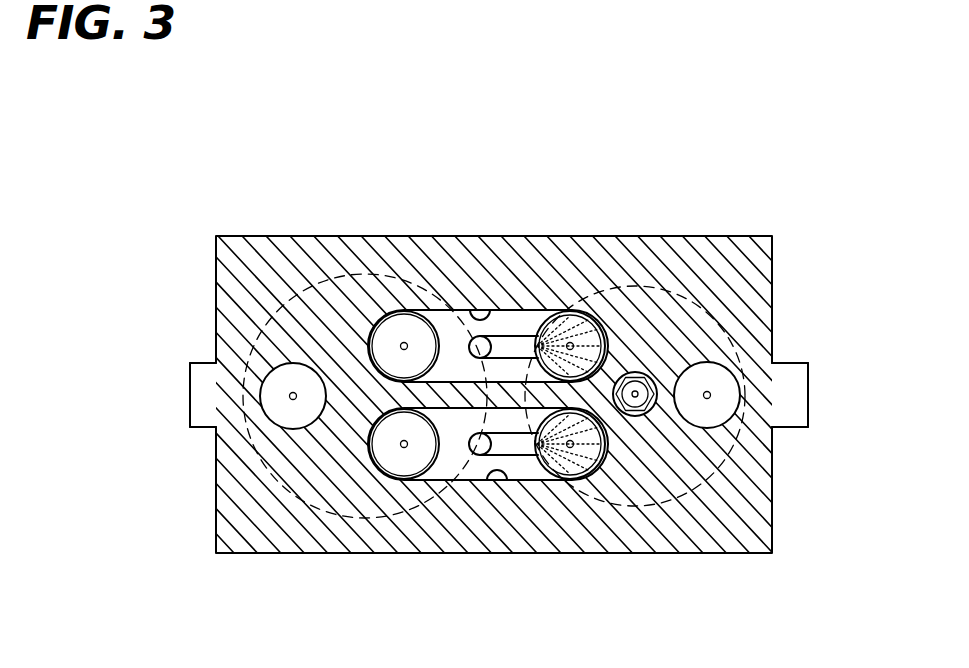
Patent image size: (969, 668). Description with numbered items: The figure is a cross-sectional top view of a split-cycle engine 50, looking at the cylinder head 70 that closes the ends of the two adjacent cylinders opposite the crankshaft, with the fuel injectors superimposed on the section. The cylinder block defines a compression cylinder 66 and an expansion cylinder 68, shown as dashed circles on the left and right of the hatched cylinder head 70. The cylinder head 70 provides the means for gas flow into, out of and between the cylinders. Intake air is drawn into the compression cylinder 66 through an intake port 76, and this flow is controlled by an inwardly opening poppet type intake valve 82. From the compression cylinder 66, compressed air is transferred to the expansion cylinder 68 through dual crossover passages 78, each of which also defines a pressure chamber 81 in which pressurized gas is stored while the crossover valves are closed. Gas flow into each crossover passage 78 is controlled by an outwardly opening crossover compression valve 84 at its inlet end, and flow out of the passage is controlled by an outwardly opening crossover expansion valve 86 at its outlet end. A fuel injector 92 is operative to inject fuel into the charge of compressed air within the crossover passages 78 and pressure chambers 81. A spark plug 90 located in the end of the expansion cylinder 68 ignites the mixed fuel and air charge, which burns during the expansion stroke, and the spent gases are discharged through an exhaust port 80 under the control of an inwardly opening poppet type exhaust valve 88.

The split-cycle engine 50 is at (180, 317).
The compression cylinder 66 is at (302, 503).
The expansion cylinder 68 is at (695, 485).
The cylinder head 70 is at (780, 520).
The intake port 76 is at (200, 408).
The crossover passage 78 is at (468, 307).
The exhaust port 80 is at (800, 413).
The pressure chamber 81 is at (435, 312).
The intake valve 82 is at (277, 423).
The crossover compression valve 84 is at (390, 327).
The crossover expansion valve 86 is at (573, 320).
The exhaust valve 88 is at (705, 412).
The spark plug 90 is at (637, 377).
The fuel injector 92 is at (513, 438).